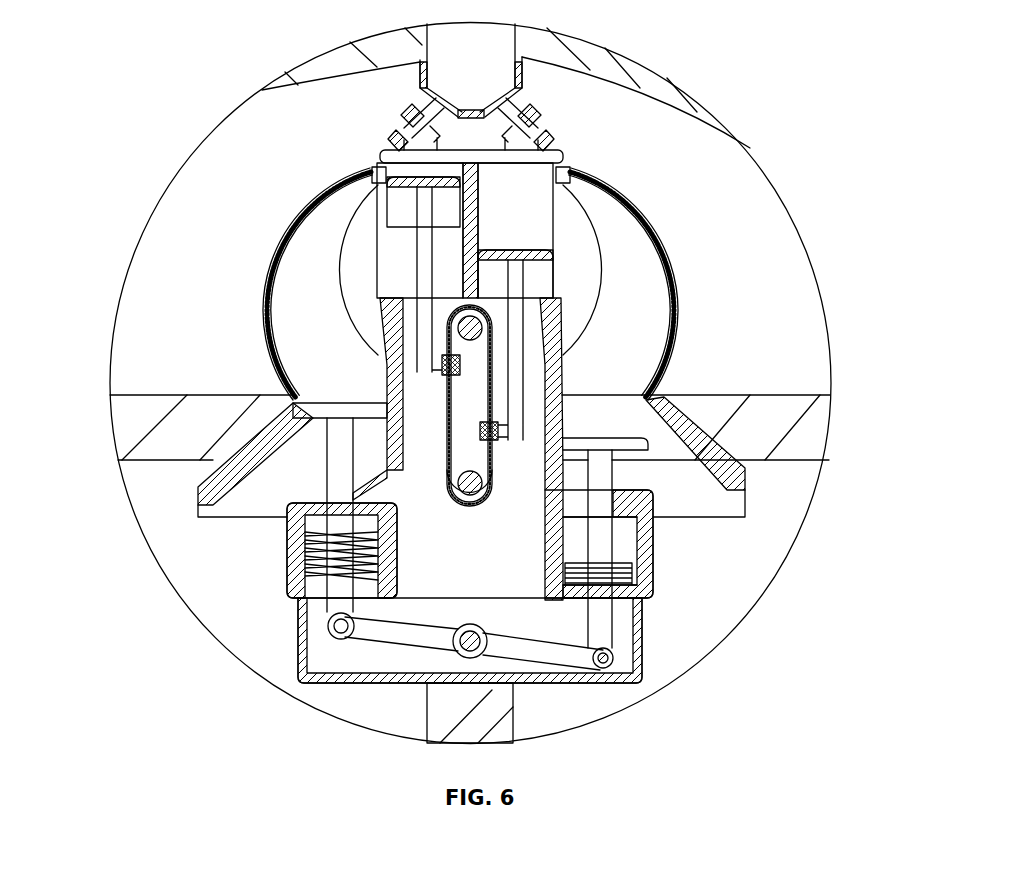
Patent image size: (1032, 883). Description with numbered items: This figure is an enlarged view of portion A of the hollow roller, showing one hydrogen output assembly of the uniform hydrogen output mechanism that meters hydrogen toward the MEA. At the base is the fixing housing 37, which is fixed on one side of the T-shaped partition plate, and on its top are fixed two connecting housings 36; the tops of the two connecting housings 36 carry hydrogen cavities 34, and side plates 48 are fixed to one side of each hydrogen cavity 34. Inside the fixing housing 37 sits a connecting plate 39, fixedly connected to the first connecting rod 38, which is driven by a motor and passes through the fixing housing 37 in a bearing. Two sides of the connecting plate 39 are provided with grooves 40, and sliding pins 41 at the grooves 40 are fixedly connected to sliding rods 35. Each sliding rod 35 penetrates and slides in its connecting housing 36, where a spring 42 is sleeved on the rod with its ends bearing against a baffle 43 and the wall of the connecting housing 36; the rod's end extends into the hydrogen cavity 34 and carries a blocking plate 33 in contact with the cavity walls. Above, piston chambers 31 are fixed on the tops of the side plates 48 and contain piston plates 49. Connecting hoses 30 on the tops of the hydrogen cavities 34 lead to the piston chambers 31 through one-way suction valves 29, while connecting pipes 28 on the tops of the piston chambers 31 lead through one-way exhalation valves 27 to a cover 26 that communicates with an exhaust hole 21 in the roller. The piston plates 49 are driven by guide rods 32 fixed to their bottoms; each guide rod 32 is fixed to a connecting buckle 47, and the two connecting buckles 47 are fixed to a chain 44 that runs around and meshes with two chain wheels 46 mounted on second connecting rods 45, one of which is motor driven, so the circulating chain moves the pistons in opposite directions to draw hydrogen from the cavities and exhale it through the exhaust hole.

The portion A is at (752, 147).
The exhaust hole 21 is at (447, 42).
The cover 26 is at (410, 77).
The one-way exhalation valve 27 is at (413, 110).
The connecting pipe 28 is at (402, 137).
The one-way suction valve 29 is at (373, 178).
The connecting hose 30 is at (270, 270).
The piston chamber 31 is at (375, 260).
The guide rod 32 is at (412, 315).
The blocking plate 33 is at (303, 410).
The hydrogen cavity 34 is at (220, 470).
The sliding rod 35 is at (327, 468).
The connecting housing 36 is at (285, 545).
The fixing housing 37 is at (298, 667).
The first connecting rod 38 is at (463, 647).
The connecting plate 39 is at (622, 663).
The groove 40 is at (613, 660).
The sliding pin 41 is at (603, 653).
The spring 42 is at (627, 570).
The baffle 43 is at (630, 553).
The chain 44 is at (492, 498).
The second connecting rod 45 is at (480, 487).
The chain wheel 46 is at (483, 463).
The connecting buckle 47 is at (502, 425).
The side plate 48 is at (570, 343).
The piston plate 49 is at (550, 250).